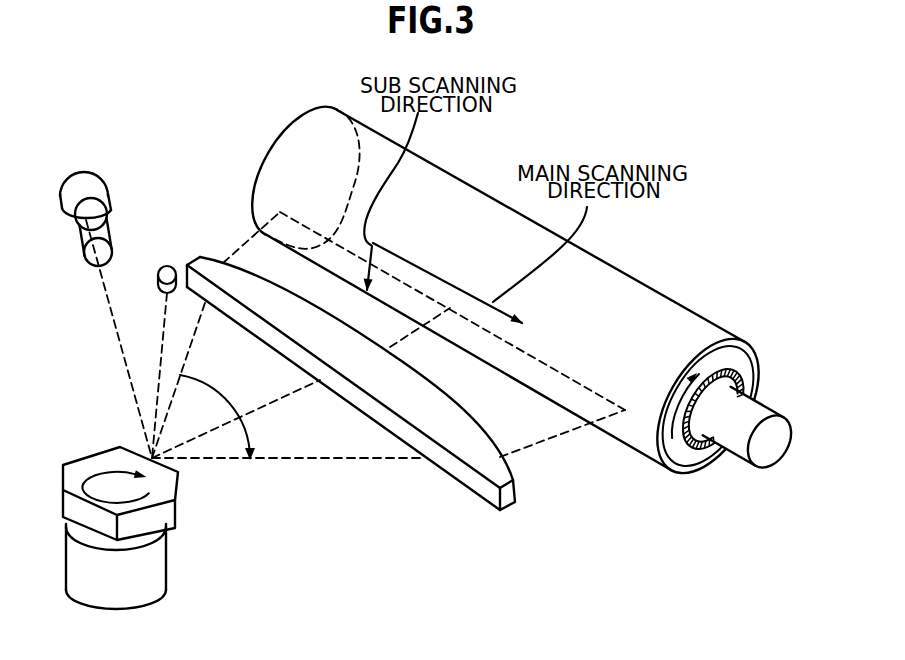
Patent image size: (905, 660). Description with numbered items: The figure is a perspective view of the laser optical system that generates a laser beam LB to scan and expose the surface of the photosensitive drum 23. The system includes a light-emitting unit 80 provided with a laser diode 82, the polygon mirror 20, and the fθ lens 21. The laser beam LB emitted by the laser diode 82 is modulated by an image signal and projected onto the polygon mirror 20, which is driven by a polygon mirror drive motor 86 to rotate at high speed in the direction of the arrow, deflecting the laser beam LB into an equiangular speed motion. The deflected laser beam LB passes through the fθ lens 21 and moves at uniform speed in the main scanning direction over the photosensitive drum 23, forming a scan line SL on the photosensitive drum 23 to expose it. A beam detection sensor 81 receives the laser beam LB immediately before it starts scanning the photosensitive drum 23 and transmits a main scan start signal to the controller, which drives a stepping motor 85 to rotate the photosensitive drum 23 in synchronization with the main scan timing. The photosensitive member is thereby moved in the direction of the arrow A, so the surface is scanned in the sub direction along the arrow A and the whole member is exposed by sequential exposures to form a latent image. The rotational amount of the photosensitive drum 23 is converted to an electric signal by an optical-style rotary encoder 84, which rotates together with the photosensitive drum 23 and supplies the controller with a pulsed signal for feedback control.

The polygon mirror 20 is at (180, 497).
The fθ lens 21 is at (470, 487).
The photosensitive drum 23 is at (692, 312).
The light-emitting unit 80 is at (65, 170).
The beam detection sensor 81 is at (165, 267).
The laser diode 82 is at (73, 228).
The rotary encoder 84 is at (743, 380).
The stepping motor 85 is at (773, 447).
The polygon mirror drive motor 86 is at (163, 557).
The scan line SL is at (345, 248).
The laser beam LB is at (298, 460).
The arrow A is at (475, 218).